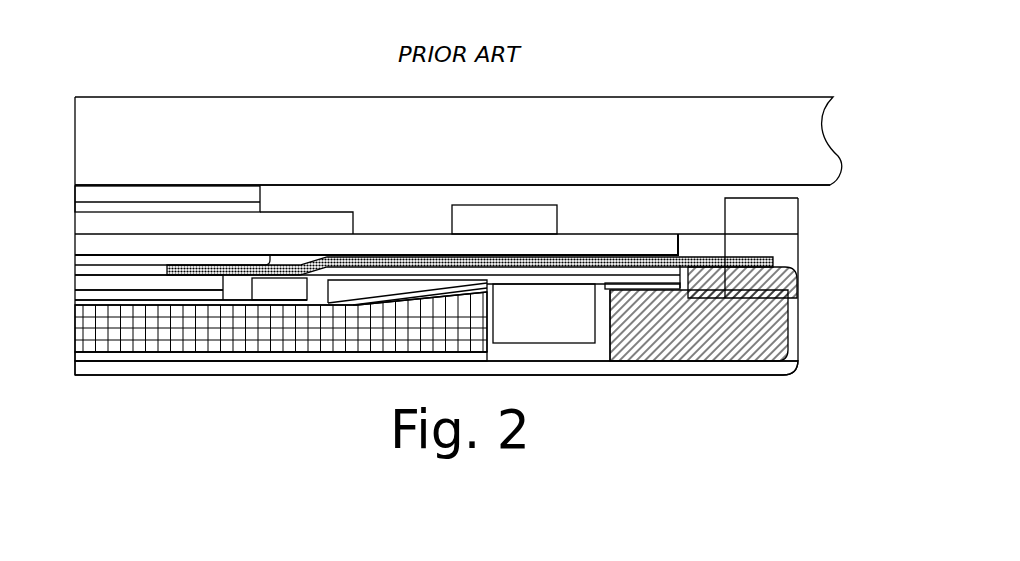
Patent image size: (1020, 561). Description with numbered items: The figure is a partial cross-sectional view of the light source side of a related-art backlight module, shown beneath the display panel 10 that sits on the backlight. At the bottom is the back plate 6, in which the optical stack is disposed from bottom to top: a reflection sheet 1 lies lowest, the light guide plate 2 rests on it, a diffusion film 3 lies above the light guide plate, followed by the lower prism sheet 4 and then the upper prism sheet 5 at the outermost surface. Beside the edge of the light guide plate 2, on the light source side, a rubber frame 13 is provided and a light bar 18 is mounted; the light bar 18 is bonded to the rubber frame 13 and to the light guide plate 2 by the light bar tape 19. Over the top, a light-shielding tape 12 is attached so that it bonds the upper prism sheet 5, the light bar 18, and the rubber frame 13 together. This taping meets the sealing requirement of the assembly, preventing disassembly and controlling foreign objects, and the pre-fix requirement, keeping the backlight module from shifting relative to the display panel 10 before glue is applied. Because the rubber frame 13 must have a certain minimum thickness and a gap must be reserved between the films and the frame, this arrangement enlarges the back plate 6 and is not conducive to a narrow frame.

The display panel 10 is at (72, 97).
The light-shielding tape 12 is at (579, 253).
The light bar 18 is at (657, 275).
The light bar tape 19 is at (658, 285).
The rubber frame 13 is at (733, 348).
The back plate 6 is at (530, 368).
The reflection sheet 1 is at (310, 355).
The light guide plate 2 is at (248, 338).
The diffusion film 3 is at (185, 302).
The lower prism sheet 4 is at (128, 295).
The upper prism sheet 5 is at (85, 280).